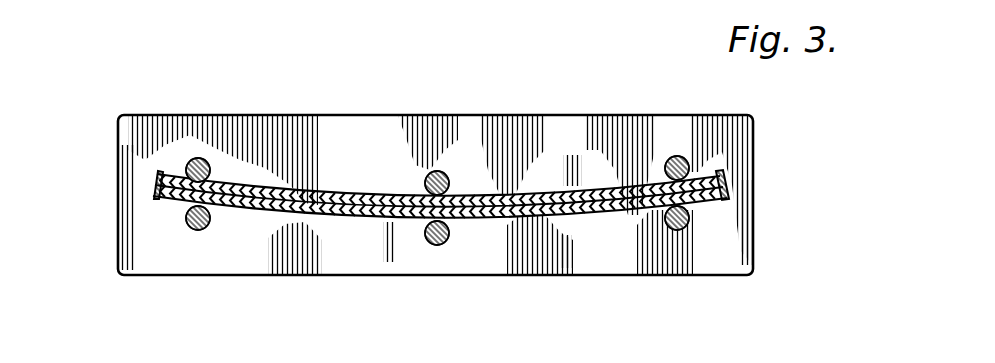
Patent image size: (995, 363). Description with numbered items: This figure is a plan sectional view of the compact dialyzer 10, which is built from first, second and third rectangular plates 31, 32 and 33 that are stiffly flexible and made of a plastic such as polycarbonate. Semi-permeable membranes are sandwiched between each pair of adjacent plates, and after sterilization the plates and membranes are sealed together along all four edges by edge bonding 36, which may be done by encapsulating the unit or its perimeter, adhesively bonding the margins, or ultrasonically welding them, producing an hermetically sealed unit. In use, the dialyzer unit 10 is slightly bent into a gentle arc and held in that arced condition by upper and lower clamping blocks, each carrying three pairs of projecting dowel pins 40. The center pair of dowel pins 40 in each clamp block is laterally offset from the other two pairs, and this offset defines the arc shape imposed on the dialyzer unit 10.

The compact dialyzer 10 is at (467, 103).
The first rectangular plate 31 is at (356, 219).
The second rectangular plate 32 is at (388, 209).
The third rectangular plate 33 is at (405, 208).
The edge bonding 36 is at (157, 210).
The dowel pins 40 is at (210, 175).